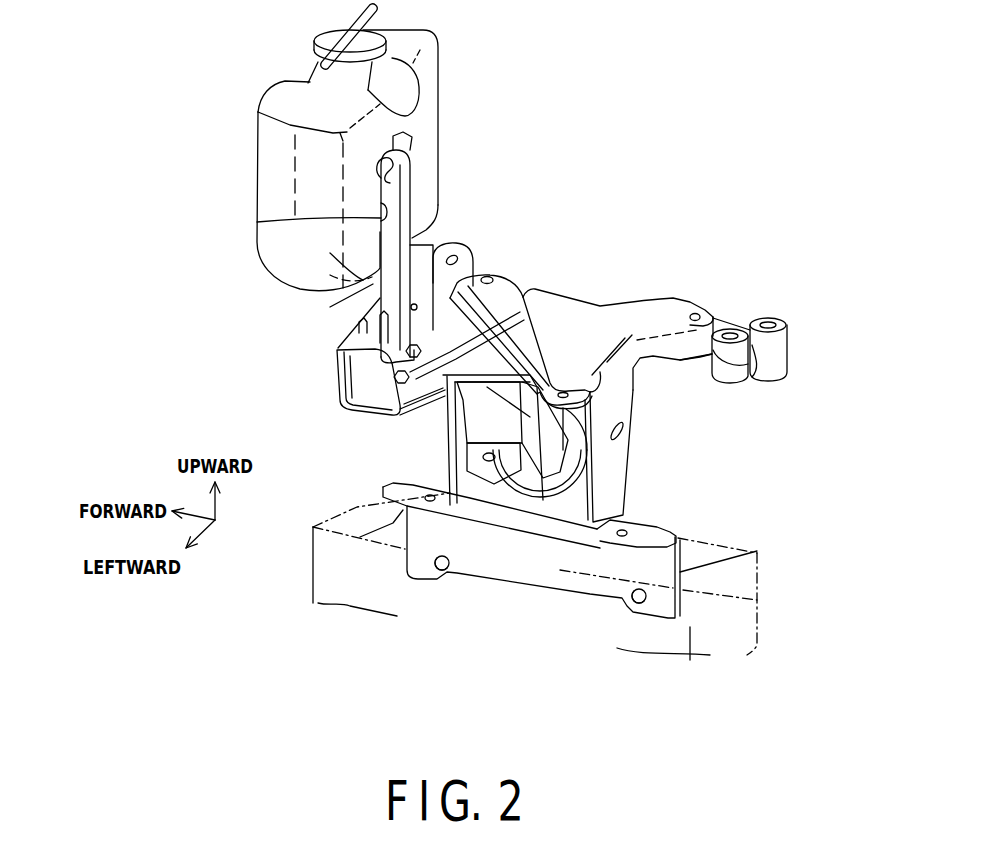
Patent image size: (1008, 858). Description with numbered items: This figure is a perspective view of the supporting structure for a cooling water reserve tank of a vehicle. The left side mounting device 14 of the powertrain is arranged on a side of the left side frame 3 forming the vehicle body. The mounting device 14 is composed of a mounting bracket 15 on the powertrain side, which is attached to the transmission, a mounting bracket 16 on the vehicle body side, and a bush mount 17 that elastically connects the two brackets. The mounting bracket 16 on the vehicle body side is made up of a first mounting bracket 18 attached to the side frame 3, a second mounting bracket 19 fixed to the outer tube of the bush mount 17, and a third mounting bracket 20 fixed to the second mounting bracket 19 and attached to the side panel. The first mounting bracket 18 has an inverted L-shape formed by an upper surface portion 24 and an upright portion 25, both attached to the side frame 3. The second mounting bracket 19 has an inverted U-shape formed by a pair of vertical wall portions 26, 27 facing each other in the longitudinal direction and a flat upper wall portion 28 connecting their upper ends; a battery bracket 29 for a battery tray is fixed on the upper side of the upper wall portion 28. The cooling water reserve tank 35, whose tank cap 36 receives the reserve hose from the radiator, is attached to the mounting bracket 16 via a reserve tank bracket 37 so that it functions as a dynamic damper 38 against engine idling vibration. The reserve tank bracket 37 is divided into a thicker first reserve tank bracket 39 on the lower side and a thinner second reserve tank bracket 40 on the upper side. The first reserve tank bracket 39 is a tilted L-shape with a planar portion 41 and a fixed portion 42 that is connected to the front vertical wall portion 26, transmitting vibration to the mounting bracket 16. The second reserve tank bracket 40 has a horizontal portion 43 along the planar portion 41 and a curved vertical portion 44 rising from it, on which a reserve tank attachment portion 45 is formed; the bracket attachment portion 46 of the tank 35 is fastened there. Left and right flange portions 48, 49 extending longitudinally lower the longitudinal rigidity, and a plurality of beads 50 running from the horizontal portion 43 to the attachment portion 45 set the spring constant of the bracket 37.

The left side frame 3 is at (345, 548).
The left side mounting device 14 is at (714, 268).
The mounting bracket on the powertrain side 15 is at (788, 320).
The mounting bracket on the vehicle body side 16 is at (645, 461).
The bush mount 17 is at (500, 494).
The first mounting bracket on the vehicle body side 18 is at (677, 618).
The second mounting bracket on the vehicle body side 19 is at (630, 488).
The third mounting bracket on the vehicle body side 20 is at (545, 470).
The upper surface portion 24 is at (652, 532).
The upright portion 25 is at (682, 571).
The vertical wall portion 26 is at (457, 467).
The vertical wall portion 27 is at (617, 413).
The upper wall portion 28 is at (508, 362).
The battery bracket 29 is at (613, 330).
The cooling water reserve tank 35 is at (268, 162).
The tank cap 36 is at (318, 30).
The reserve tank bracket 37 is at (327, 402).
The dynamic damper 38 is at (180, 258).
The first reserve tank bracket 39 is at (432, 401).
The second reserve tank bracket 40 is at (336, 380).
The planar portion 41 is at (455, 362).
The fixed portion 42 is at (441, 411).
The horizontal portion 43 is at (438, 328).
The vertical portion 44 is at (424, 243).
The reserve tank attachment portion 45 is at (402, 187).
The bracket attachment portion 46 is at (258, 222).
The flange portion 48 is at (358, 368).
The flange portion 49 is at (470, 253).
The beads 50 is at (380, 342).